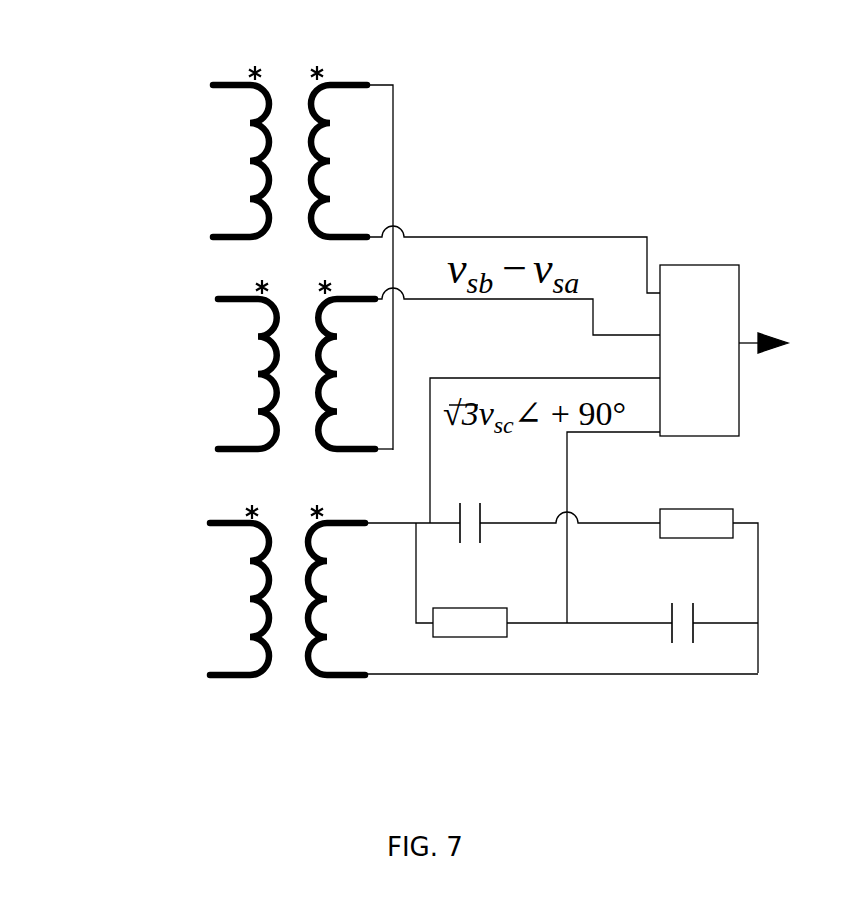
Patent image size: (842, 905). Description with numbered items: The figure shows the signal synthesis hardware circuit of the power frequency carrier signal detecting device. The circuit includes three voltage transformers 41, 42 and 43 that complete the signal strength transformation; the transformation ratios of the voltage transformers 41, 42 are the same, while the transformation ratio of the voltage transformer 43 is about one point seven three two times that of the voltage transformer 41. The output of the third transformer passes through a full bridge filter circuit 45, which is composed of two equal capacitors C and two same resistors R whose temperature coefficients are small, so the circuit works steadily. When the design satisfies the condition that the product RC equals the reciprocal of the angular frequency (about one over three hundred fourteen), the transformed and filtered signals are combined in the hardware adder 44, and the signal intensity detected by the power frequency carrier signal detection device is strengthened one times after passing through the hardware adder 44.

The voltage transformer 41 is at (160, 175).
The voltage transformer 42 is at (154, 401).
The voltage transformer 43 is at (138, 592).
The hardware adder 44 is at (688, 237).
The full bridge filter circuit 45 is at (577, 656).